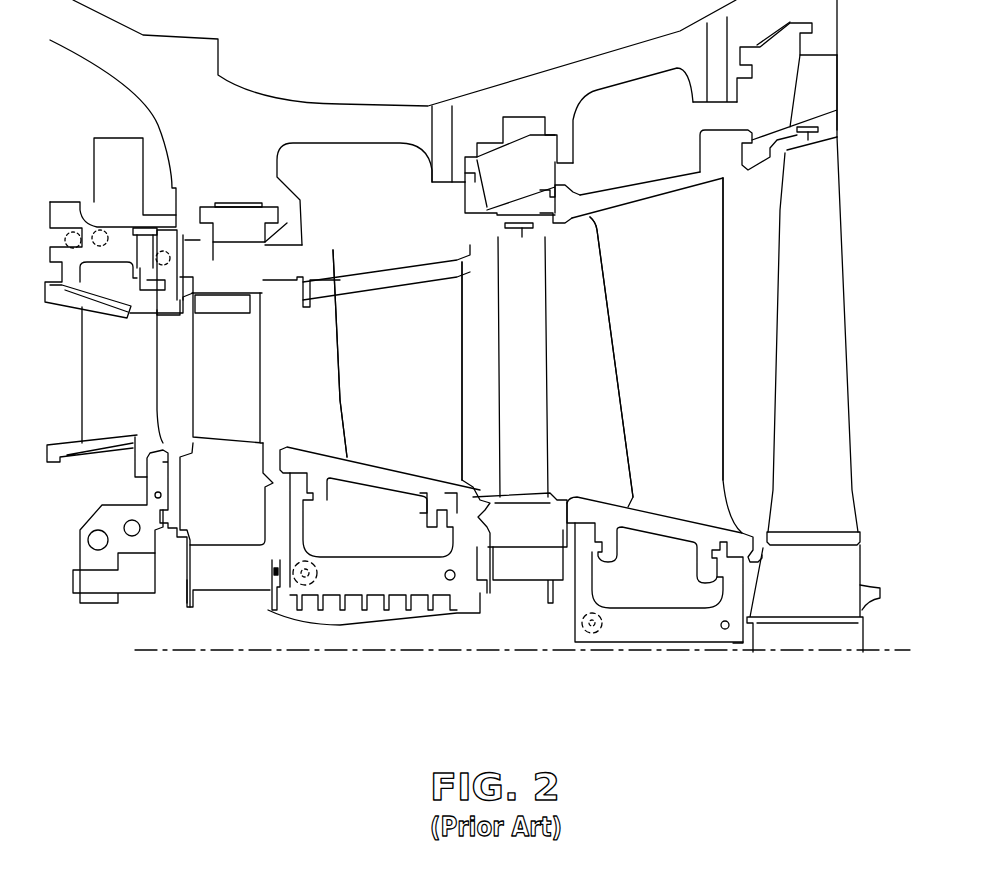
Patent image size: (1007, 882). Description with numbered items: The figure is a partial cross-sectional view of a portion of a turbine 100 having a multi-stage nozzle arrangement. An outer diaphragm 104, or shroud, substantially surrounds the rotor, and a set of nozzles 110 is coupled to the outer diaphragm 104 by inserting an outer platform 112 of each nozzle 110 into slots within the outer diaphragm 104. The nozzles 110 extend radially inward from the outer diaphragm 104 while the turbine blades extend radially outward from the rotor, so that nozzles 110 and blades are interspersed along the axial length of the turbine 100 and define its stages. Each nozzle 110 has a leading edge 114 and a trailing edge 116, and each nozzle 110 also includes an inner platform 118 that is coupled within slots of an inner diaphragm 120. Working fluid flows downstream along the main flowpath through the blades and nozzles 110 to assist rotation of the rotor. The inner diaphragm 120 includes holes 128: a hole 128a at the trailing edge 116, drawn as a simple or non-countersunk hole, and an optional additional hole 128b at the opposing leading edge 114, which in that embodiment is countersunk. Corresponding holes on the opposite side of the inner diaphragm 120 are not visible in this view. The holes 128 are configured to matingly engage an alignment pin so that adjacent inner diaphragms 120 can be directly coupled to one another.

The turbine 100 is at (363, 82).
The outer diaphragm 104 is at (473, 243).
The nozzles 110 is at (420, 382).
The outer platform 112 is at (371, 275).
The leading edge 114 is at (333, 387).
The trailing edge 116 is at (465, 405).
The inner platform 118 is at (398, 477).
The inner diaphragm 120 is at (372, 580).
The holes 128 is at (521, 647).
The hole 128a is at (460, 590).
The hole 128b is at (293, 578).